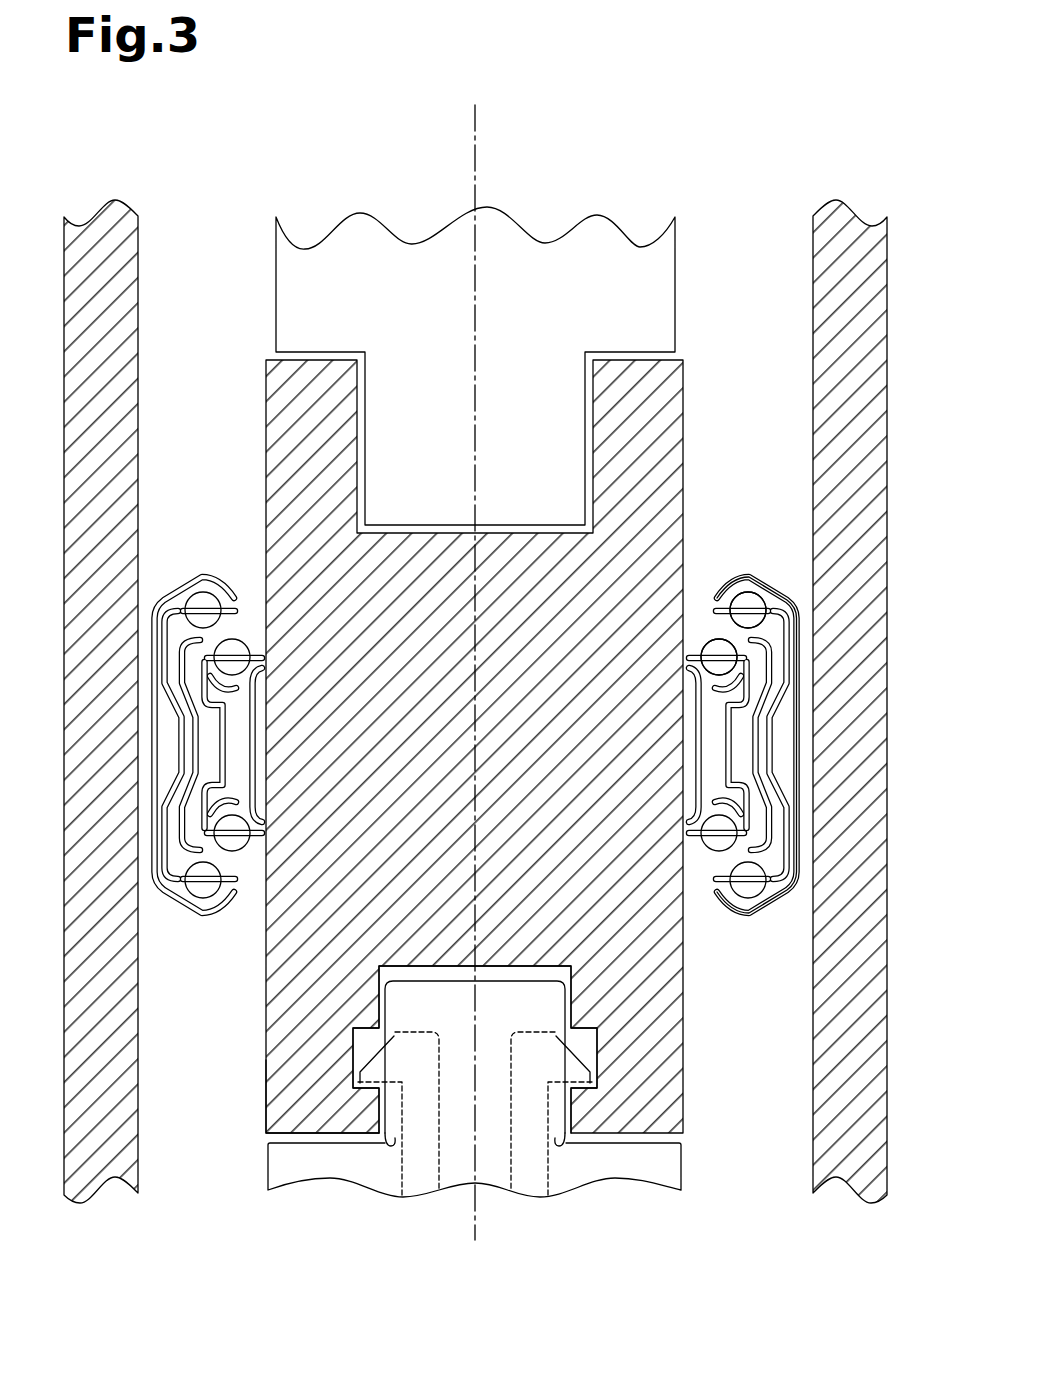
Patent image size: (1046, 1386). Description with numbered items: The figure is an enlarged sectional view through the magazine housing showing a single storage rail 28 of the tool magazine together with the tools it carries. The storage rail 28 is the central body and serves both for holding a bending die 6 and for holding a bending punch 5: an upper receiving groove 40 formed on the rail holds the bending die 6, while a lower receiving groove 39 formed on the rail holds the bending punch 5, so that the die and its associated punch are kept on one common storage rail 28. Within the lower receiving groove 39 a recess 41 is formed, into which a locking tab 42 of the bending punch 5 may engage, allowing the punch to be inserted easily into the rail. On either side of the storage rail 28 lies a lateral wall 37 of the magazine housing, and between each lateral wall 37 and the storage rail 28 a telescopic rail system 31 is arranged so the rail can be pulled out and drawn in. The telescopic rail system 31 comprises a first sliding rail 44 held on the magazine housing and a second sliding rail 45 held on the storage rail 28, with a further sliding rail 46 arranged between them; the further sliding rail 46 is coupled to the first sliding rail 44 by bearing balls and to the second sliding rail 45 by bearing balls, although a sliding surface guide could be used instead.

The bending punch 5 is at (577, 1172).
The bending die 6 is at (540, 277).
The storage rail 28 is at (285, 1072).
The telescopic rail system 31 is at (193, 560).
The lateral wall 37 is at (92, 815).
The lower receiving groove 39 is at (590, 998).
The upper receiving groove 40 is at (602, 427).
The recess 41 is at (590, 1100).
The locking tab 42 is at (580, 1078).
The first sliding rail 44 is at (785, 598).
The second sliding rail 45 is at (687, 687).
The further sliding rail 46 is at (720, 603).